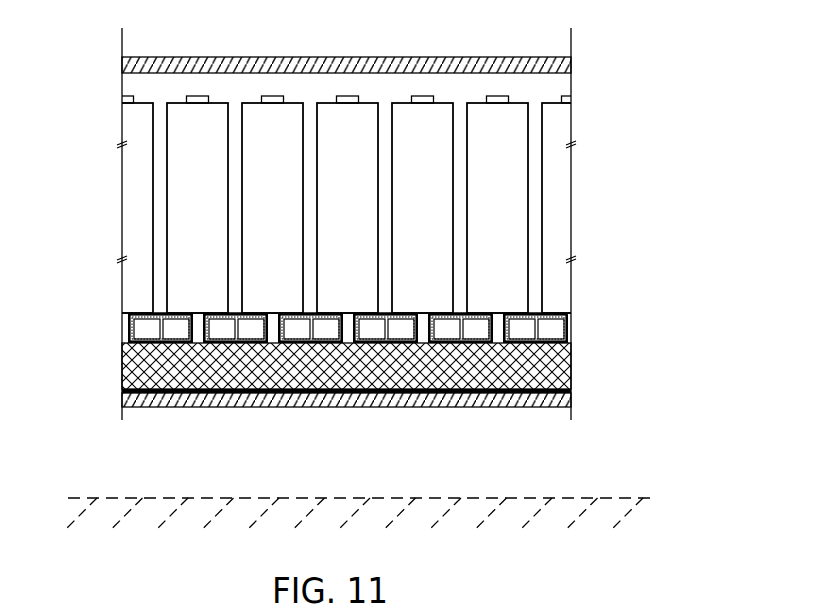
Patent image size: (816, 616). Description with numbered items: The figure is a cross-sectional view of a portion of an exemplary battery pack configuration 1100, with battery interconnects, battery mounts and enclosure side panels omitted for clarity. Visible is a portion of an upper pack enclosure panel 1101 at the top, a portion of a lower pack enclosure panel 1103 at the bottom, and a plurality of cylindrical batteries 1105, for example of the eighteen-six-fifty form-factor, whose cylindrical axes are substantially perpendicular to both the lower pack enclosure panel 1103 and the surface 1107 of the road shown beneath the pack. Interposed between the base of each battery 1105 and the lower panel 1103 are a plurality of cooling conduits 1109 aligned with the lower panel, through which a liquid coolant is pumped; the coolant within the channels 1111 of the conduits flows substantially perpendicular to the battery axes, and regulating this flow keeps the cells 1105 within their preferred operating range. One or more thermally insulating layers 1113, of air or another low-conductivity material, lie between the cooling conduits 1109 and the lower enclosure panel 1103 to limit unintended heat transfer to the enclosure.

The battery pack configuration 1100 is at (611, 51).
The upper pack enclosure panel 1101 is at (243, 62).
The lower pack enclosure panel 1103 is at (393, 403).
The batteries 1105 is at (525, 212).
The surface of the road 1107 is at (338, 498).
The cooling conduits 1109 is at (233, 313).
The channels 1111 is at (518, 330).
The thermally insulating layers 1113 is at (122, 373).